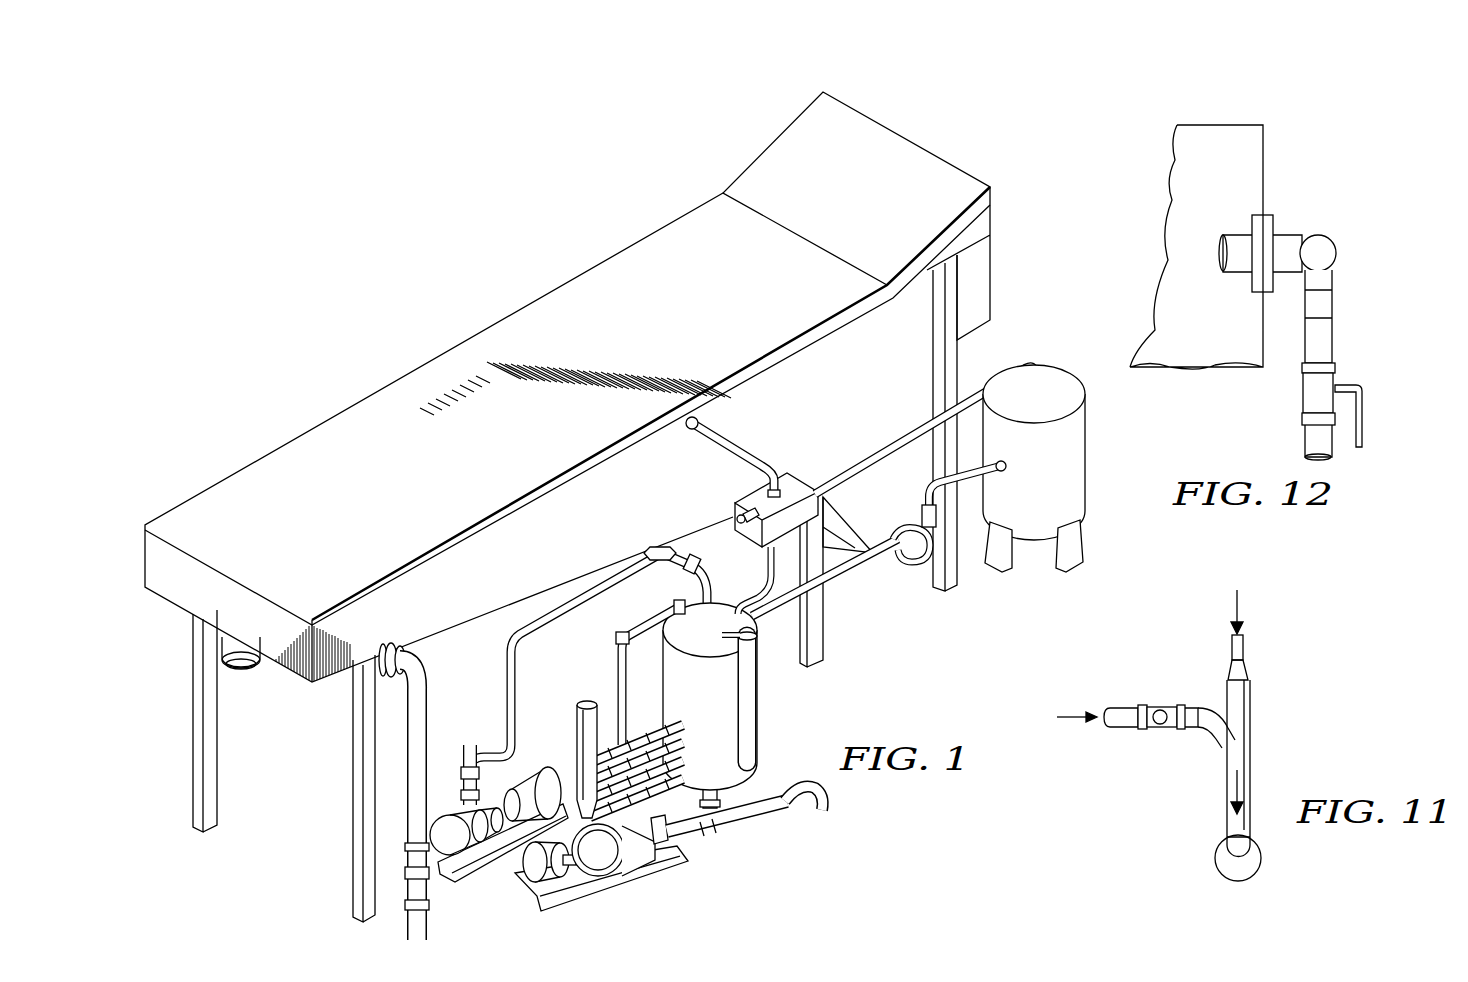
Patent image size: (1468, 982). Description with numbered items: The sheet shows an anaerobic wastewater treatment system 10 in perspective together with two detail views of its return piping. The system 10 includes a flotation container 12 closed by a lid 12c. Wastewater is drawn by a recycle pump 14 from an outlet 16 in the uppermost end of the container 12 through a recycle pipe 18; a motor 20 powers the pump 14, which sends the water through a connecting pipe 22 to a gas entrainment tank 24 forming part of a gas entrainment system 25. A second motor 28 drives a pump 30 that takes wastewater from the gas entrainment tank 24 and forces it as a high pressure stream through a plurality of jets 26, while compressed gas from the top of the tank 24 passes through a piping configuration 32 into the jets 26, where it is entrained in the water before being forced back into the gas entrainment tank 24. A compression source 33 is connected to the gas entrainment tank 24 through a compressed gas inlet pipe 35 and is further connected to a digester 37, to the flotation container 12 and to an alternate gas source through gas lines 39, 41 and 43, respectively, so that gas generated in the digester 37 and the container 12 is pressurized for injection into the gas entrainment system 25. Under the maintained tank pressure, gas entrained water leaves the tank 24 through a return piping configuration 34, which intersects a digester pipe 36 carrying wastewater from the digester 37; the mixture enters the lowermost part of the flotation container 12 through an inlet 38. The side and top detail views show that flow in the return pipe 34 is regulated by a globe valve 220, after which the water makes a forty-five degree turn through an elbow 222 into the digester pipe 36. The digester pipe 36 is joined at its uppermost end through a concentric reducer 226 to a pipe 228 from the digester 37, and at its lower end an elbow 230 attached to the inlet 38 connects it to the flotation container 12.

In FIG. 1, the anaerobic wastewater treatment system 10 is at (473, 223).
In FIG. 1, the flotation container 12 is at (618, 524).
In FIG. 12, the flotation container 12 is at (1224, 196).
In FIG. 1, the lid 12c is at (613, 360).
In FIG. 1, the recycle pump 14 is at (457, 812).
In FIG. 1, the outlet 16 is at (413, 655).
In FIG. 1, the recycle pipe 18 is at (430, 702).
In FIG. 1, the motor 20 is at (537, 768).
In FIG. 1, the connecting pipe 22 is at (536, 629).
In FIG. 1, the gas entrainment tank 24 is at (730, 705).
In FIG. 1, the gas entrainment system 25 is at (818, 740).
In FIG. 1, the jets 26 is at (692, 712).
In FIG. 1, the motor 28 is at (556, 890).
In FIG. 1, the pump 30 is at (617, 882).
In FIG. 1, the piping configuration 32 is at (595, 677).
In FIG. 1, the compression source 33 is at (788, 474).
In FIG. 1, the return piping configuration 34 is at (837, 582).
In FIG. 12, the return piping configuration 34 is at (1307, 437).
In FIG. 11, the return piping configuration 34 is at (1110, 706).
In FIG. 1, the compressed gas inlet pipe 35 is at (754, 582).
In FIG. 1, the digester pipe 36 is at (921, 517).
In FIG. 12, the digester pipe 36 is at (1333, 250).
In FIG. 11, the digester pipe 36 is at (1250, 737).
In FIG. 1, the digester 37 is at (1081, 453).
In FIG. 1, the inlet 38 is at (898, 563).
In FIG. 12, the inlet 38 is at (1268, 215).
In FIG. 11, the inlet 38 is at (1260, 859).
In FIG. 1, the gas line 39 is at (899, 433).
In FIG. 1, the gas line 41 is at (738, 447).
In FIG. 1, the gas line 43 is at (735, 518).
In FIG. 12, the globe valve 220 is at (1335, 370).
In FIG. 11, the globe valve 220 is at (1152, 705).
In FIG. 12, the elbow 222 is at (1333, 285).
In FIG. 11, the elbow 222 is at (1195, 727).
In FIG. 11, the concentric reducer 226 is at (1250, 677).
In FIG. 11, the pipe 228 is at (1245, 649).
In FIG. 12, the elbow 230 is at (1290, 236).
In FIG. 11, the elbow 230 is at (1233, 857).